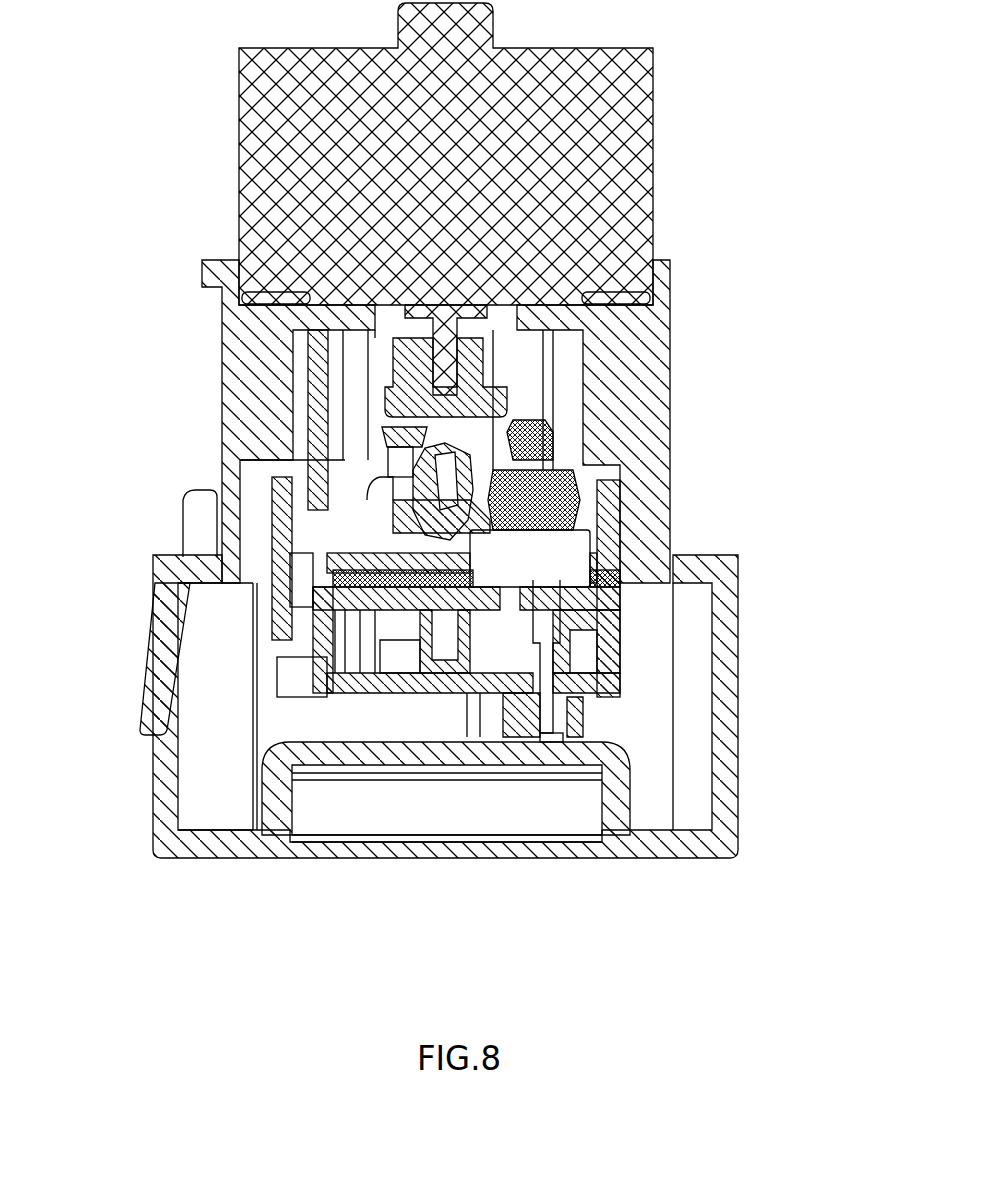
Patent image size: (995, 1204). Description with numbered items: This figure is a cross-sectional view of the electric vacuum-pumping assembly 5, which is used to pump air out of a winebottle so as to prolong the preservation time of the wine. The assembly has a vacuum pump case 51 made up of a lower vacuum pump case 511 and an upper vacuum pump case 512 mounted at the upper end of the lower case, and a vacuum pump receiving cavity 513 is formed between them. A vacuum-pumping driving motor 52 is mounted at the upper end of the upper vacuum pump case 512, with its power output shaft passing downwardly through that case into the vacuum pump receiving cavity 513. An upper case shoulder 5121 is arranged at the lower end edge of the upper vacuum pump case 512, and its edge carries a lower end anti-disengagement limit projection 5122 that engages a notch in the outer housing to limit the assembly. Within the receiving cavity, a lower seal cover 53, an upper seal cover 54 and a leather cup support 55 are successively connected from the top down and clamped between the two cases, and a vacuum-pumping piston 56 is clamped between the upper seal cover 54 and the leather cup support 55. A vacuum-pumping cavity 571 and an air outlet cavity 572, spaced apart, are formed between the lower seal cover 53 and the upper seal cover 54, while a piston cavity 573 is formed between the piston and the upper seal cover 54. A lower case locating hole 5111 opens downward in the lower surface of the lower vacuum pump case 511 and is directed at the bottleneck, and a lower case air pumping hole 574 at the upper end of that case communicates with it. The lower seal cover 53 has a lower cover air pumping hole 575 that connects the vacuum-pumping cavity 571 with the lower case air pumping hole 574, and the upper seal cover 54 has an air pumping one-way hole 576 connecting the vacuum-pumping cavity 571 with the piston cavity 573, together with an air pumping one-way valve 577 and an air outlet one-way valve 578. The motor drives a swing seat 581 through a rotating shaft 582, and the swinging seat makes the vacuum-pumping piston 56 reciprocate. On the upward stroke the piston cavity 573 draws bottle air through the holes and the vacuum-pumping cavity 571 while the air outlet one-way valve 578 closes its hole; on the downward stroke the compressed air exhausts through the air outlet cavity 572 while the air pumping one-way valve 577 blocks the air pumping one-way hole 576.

The electric vacuum-pumping assembly 5 is at (196, 452).
The vacuum pump case 51 is at (449, 620).
The lower vacuum pump case 511 is at (390, 735).
The lower case locating hole 5111 is at (422, 803).
The upper vacuum pump case 512 is at (622, 378).
The upper case shoulder 5121 is at (555, 587).
The lower end anti-disengagement limit projection 5122 is at (157, 655).
The vacuum pump receiving cavity 513 is at (211, 781).
The vacuum-pumping driving motor 52 is at (583, 160).
The lower seal cover 53 is at (620, 667).
The upper seal cover 54 is at (274, 610).
The leather cup support 55 is at (315, 533).
The vacuum-pumping piston 56 is at (550, 450).
The vacuum-pumping cavity 571 is at (583, 650).
The air outlet cavity 572 is at (397, 657).
The piston cavity 573 is at (523, 550).
The lower case air pumping hole 574 is at (552, 750).
The lower cover air pumping hole 575 is at (550, 713).
The air pumping one-way hole 576 is at (556, 600).
The air pumping one-way valve 577 is at (533, 583).
The air outlet one-way valve 578 is at (400, 620).
The swing seat 581 is at (393, 508).
The rotating shaft 582 is at (433, 430).